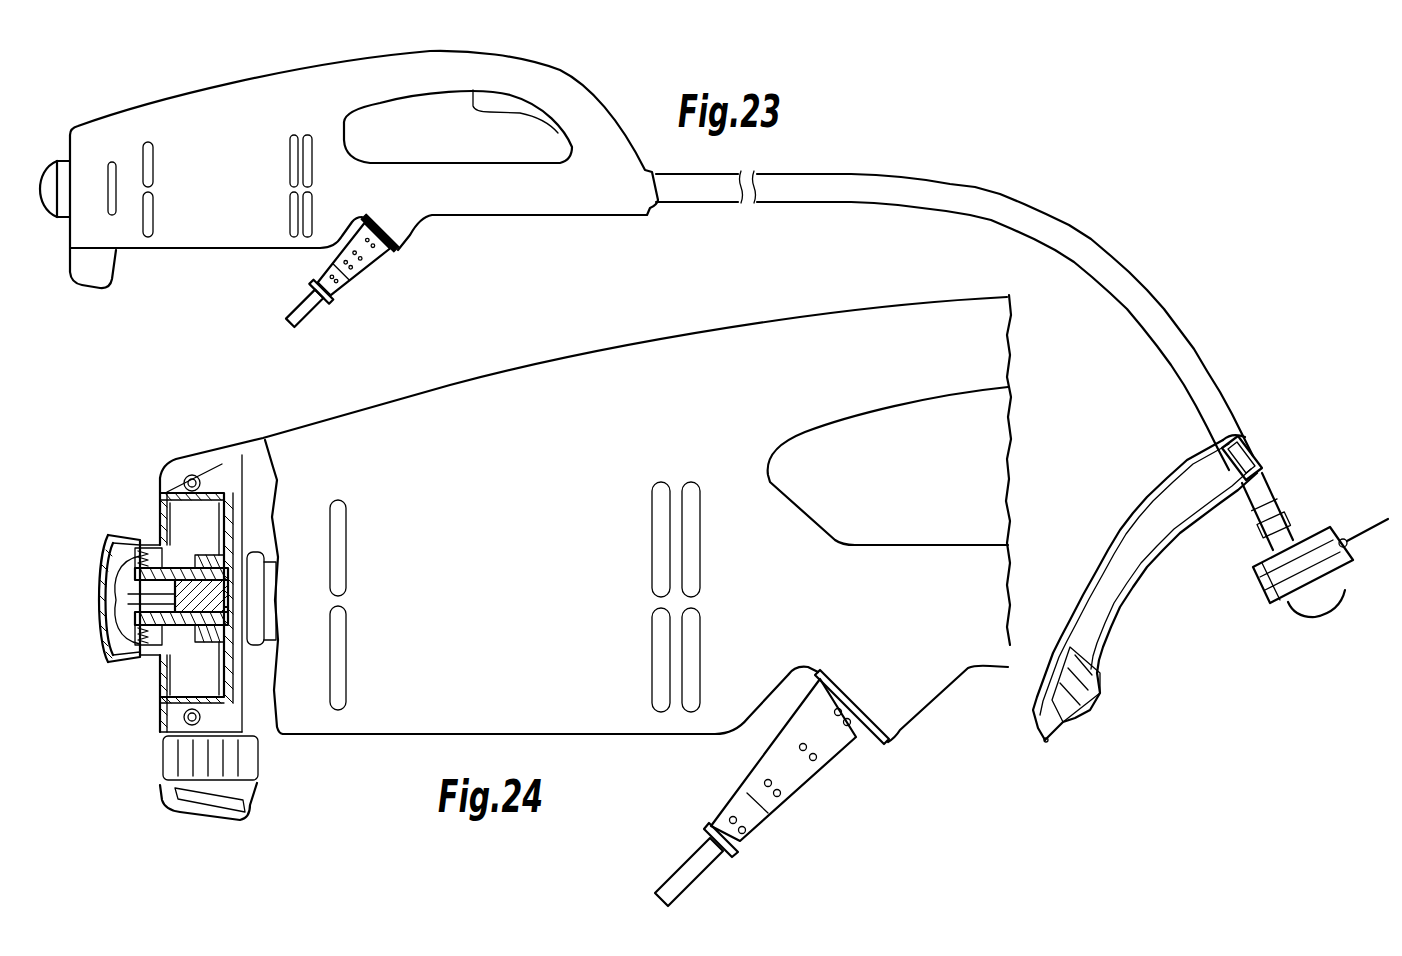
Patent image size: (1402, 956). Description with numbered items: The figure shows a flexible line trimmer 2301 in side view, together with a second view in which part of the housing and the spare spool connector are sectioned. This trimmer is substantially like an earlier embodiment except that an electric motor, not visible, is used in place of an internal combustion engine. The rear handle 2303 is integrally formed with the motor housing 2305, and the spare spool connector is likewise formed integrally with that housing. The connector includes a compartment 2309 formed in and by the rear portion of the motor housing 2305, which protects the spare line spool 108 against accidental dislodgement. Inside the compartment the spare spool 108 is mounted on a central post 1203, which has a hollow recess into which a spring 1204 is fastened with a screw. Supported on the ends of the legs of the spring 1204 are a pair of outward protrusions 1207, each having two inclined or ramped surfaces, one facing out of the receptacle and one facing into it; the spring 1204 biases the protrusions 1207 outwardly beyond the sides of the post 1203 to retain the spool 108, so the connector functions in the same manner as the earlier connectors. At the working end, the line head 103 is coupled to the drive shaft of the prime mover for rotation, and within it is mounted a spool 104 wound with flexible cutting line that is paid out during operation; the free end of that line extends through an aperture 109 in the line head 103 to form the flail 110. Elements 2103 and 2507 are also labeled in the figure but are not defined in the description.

In FIG. 23, the spare line spool 108 is at (55, 158).
In FIG. 24, the spare line spool 108 is at (105, 537).
In FIG. 23, the motor housing 2305 is at (320, 63).
In FIG. 24, the motor housing 2305 is at (532, 362).
In FIG. 23, the rear handle 2303 is at (550, 83).
In FIG. 23, the line trimmer 2301 is at (906, 108).
In FIG. 23, the cable 2103 is at (1005, 192).
In FIG. 24, the cable 2103 is at (1145, 588).
In FIG. 24, the central post 1203 is at (150, 552).
In FIG. 24, the spring 1204 is at (116, 603).
In FIG. 24, the outward protrusions 1207 is at (135, 556).
In FIG. 24, the cavity 2507 is at (134, 672).
In FIG. 24, the compartment 2309 is at (188, 672).
In FIG. 24, the aperture 109 is at (1345, 535).
In FIG. 24, the line head 103 is at (1283, 573).
In FIG. 24, the spool 104 is at (1293, 603).
In FIG. 24, the flail 110 is at (1368, 545).